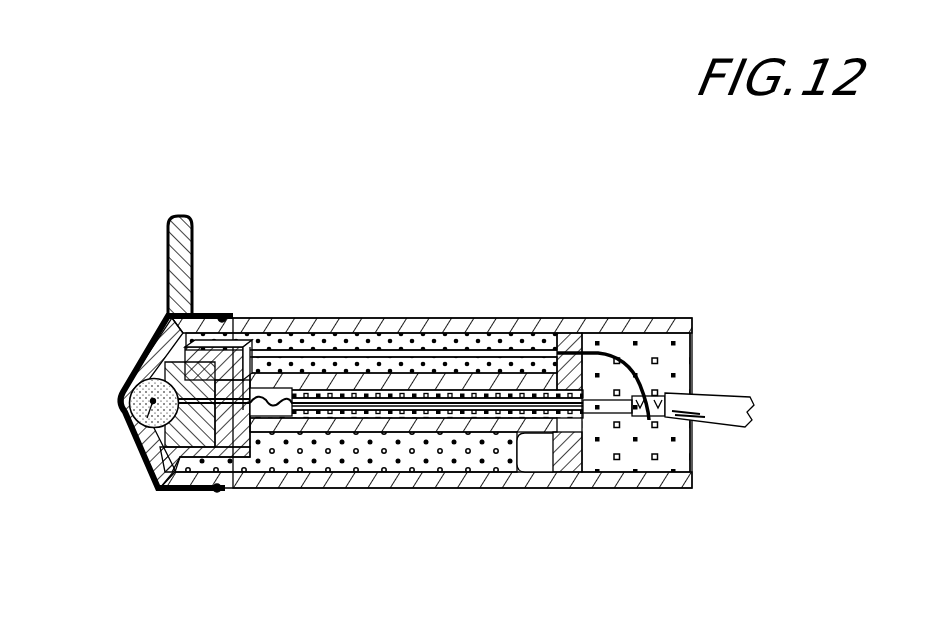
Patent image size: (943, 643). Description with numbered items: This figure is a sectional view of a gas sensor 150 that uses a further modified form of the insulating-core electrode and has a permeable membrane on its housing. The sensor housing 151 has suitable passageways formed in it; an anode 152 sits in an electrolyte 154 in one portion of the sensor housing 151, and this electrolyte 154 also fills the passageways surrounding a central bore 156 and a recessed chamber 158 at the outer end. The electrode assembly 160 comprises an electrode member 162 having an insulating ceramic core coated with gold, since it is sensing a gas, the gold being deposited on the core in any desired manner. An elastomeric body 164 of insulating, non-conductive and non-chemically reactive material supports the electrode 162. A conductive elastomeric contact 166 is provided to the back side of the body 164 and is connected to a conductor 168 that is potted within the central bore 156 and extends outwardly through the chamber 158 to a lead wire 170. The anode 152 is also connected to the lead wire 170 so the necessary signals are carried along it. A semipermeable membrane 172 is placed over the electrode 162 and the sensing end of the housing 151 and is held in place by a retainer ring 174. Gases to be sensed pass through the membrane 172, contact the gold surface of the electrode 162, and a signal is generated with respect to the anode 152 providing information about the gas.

The gas sensor 150 is at (498, 300).
The sensor housing 151 is at (633, 490).
The anode 152 is at (462, 343).
The electrolyte 154 is at (388, 325).
The central bore 156 is at (556, 400).
The recessed chamber 158 is at (660, 343).
The electrode assembly 160 is at (110, 416).
The electrode member 162 is at (137, 430).
The elastomeric body 164 is at (241, 345).
The conductive elastomeric contact 166 is at (245, 470).
The conductor 168 is at (259, 400).
The lead wire 170 is at (724, 390).
The membrane 172 is at (193, 237).
The retainer ring 174 is at (222, 316).